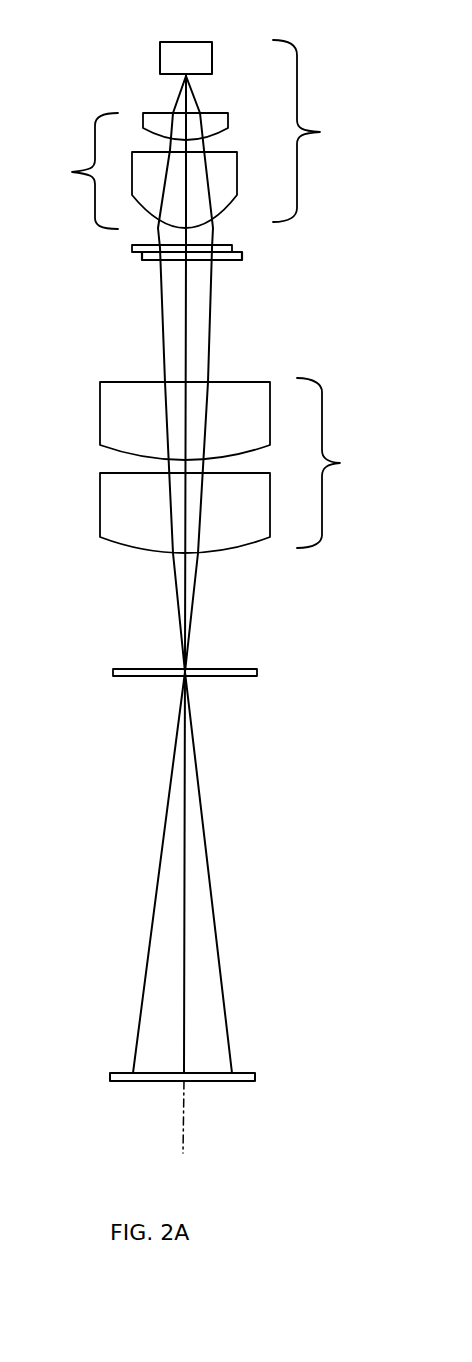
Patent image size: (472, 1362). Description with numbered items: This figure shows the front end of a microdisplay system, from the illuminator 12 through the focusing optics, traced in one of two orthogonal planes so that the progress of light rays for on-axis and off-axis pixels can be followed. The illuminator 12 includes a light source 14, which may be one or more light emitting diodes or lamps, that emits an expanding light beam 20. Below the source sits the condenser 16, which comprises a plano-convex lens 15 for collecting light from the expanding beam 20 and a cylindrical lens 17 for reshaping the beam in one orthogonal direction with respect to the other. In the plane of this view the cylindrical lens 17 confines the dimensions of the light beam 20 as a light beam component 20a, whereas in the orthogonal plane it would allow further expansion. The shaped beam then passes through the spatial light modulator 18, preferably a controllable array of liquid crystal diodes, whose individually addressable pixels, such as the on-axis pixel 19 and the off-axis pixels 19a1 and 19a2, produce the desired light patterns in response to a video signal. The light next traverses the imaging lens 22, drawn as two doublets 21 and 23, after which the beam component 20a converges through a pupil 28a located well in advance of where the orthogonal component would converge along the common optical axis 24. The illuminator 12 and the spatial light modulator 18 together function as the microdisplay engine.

The illuminator 12 is at (319, 131).
The light source 14 is at (170, 47).
The PCX (plano-convex) lens 15 is at (220, 123).
The condenser 16 is at (76, 171).
The cylindrical lens 17 is at (220, 188).
The spatial light modulator 18 is at (242, 256).
The pixel 19 is at (185, 268).
The pixel 19a1 is at (211, 266).
The pixel 19a2 is at (157, 264).
The light beam 20 is at (168, 98).
The light beam component 20a is at (218, 358).
The doublet 21 is at (117, 395).
The imaging lens 22 is at (341, 463).
The doublet 23 is at (113, 502).
The optical axis 24 is at (183, 1112).
The pupil 28a is at (182, 668).